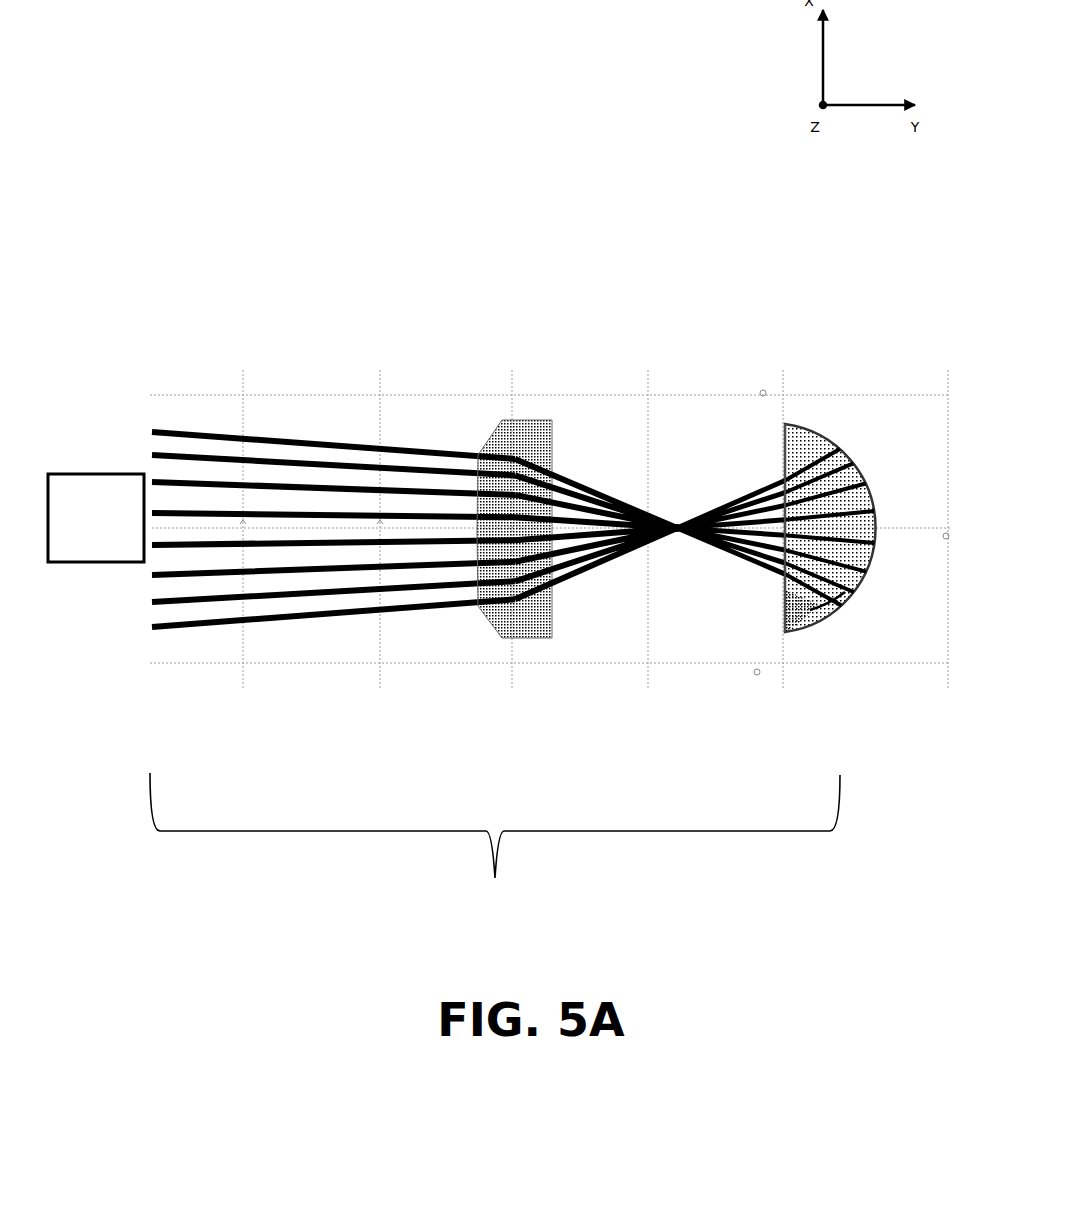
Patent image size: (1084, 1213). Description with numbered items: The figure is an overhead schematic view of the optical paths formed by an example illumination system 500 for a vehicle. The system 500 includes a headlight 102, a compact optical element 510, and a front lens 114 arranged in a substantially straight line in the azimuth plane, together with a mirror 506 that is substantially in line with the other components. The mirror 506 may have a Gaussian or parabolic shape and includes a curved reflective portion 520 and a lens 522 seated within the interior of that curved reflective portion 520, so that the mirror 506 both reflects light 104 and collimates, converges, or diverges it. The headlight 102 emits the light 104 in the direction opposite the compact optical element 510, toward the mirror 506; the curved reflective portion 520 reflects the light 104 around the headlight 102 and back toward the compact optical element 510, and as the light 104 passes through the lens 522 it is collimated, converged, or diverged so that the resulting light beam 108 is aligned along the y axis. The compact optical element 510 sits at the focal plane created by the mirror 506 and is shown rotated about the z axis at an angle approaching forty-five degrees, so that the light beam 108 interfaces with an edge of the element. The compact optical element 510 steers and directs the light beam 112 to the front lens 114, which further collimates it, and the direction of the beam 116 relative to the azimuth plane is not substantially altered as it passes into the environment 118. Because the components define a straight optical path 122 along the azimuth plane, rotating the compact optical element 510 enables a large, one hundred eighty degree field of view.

The illumination system 500 is at (200, 134).
The beam 116 is at (242, 430).
The front lens 114 is at (520, 412).
The compact optical element 510 is at (677, 506).
The headlight 102 is at (784, 505).
The mirror 506 is at (843, 432).
The environment 118 is at (96, 518).
The light beam 112 is at (602, 575).
The light beam 108 is at (733, 568).
The light 104 is at (827, 576).
The lens 522 is at (799, 628).
The curved reflective portion 520 is at (838, 622).
The straight optical path 122 is at (495, 849).